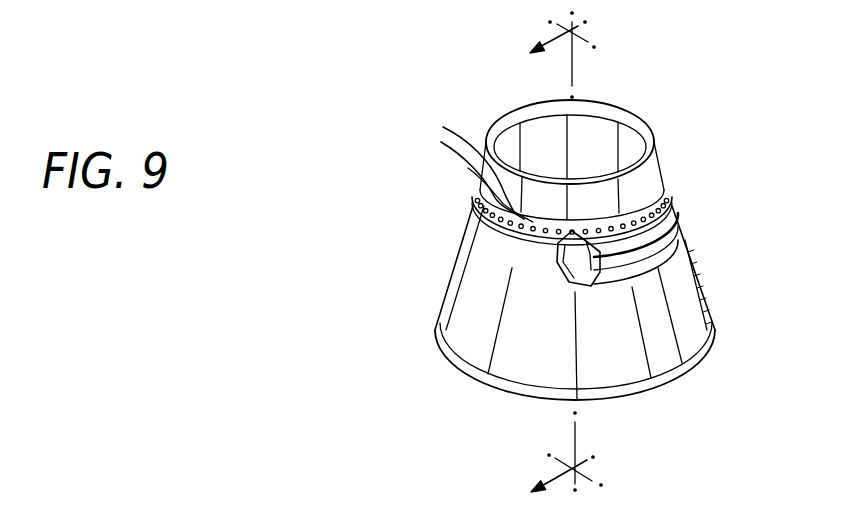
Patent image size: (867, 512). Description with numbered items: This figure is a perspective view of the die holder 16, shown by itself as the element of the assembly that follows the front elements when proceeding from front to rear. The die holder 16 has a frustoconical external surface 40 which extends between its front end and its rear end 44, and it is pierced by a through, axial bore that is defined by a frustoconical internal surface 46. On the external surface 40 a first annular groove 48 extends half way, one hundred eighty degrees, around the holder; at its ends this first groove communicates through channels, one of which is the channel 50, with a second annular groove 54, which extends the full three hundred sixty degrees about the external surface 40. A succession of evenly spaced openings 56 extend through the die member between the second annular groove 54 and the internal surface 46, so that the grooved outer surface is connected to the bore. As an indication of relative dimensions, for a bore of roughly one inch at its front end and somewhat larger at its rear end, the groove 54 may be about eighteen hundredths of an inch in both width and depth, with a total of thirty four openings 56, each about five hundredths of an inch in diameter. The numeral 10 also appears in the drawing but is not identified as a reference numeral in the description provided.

The section line / viewing direction 10 is at (578, 250).
The die holder 16 is at (446, 216).
The frustoconical external surface 40 is at (450, 293).
The rear end 44 is at (648, 128).
The frustoconical internal surface 46 is at (523, 118).
The first annular groove 48 is at (672, 236).
The channel 50 is at (557, 268).
The second annular groove 54 is at (668, 190).
The openings 56 is at (466, 173).